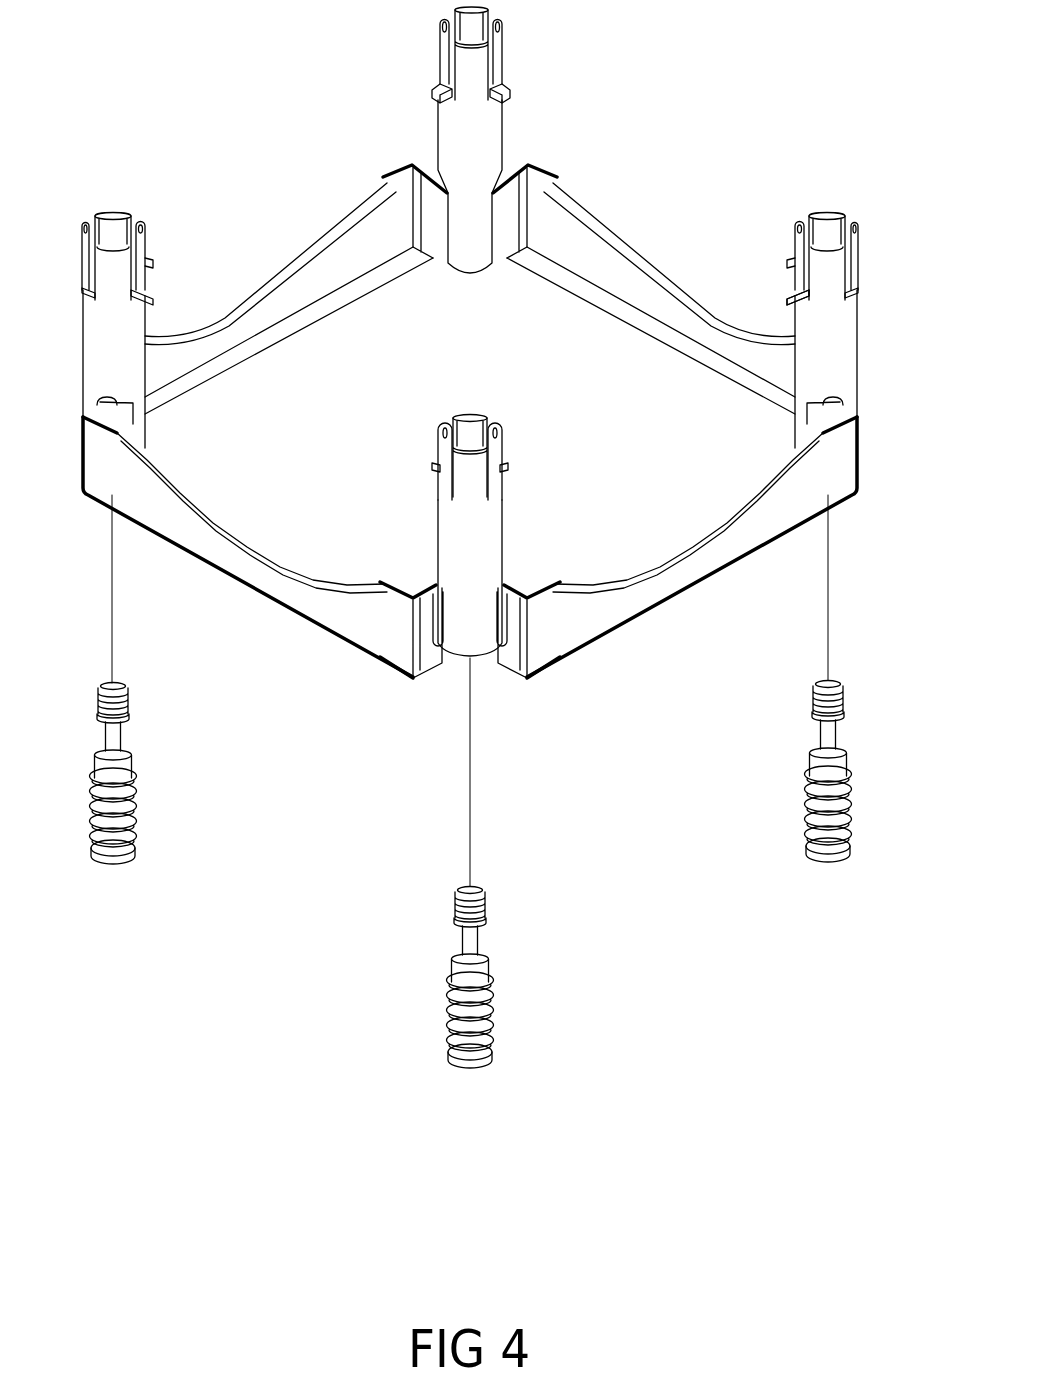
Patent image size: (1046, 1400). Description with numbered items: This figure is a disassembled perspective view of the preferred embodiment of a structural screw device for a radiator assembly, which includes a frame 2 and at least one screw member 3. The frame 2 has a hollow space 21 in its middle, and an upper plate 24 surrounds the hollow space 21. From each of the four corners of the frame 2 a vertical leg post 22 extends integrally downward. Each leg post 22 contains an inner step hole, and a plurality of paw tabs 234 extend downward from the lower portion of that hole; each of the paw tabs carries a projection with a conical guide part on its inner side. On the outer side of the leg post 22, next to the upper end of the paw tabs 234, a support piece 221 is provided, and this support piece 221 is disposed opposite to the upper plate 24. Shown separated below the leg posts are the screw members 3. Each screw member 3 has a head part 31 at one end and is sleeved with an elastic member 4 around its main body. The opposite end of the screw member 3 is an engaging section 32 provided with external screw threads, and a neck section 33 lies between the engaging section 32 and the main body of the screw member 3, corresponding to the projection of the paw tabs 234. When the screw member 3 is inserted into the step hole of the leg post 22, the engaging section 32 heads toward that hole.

The frame 2 is at (515, 446).
The hollow space 21 is at (631, 387).
The leg post 22 is at (457, 540).
The support piece 221 is at (780, 307).
The paw tabs 234 is at (830, 265).
The upper plate 24 is at (288, 325).
The screw member 3 is at (489, 972).
The head part 31 is at (485, 1043).
The engaging section 32 is at (478, 895).
The neck section 33 is at (470, 942).
The elastic member 4 is at (448, 993).